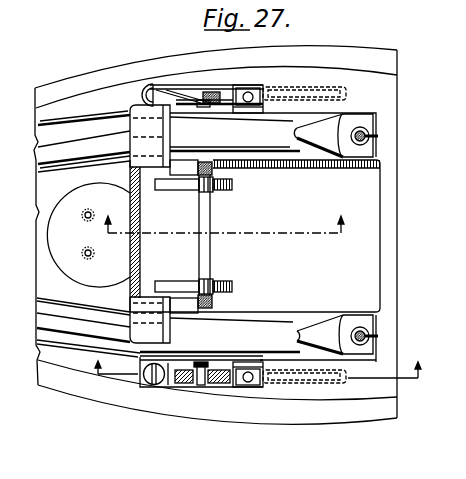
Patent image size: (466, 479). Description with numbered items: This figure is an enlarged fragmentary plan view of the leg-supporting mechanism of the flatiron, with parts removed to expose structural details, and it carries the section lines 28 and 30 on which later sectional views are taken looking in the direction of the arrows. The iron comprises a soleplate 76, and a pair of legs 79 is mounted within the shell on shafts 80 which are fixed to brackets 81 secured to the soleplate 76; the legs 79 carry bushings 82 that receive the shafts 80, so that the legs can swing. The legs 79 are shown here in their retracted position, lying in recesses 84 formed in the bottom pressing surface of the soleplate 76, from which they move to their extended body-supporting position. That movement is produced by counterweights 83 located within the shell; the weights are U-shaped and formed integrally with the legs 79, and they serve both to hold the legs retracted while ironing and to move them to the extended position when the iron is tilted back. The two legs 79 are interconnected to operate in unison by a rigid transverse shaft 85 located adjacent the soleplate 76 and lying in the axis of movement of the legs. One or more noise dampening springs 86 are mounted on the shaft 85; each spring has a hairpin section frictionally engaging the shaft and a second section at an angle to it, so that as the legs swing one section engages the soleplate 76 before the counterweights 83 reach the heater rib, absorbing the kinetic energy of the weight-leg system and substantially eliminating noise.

The section line 28— 28 is at (258, 373).
The section line 30— 30 is at (225, 236).
The soleplate 76 is at (376, 418).
The legs 79 is at (304, 87).
The shafts 80 is at (220, 93).
The brackets 81 is at (221, 110).
The bushings 82 is at (189, 386).
The counterweights 83 is at (130, 108).
The recesses 84 is at (285, 88).
The transverse shaft 85 is at (211, 216).
The noise dampening springs 86 is at (233, 184).